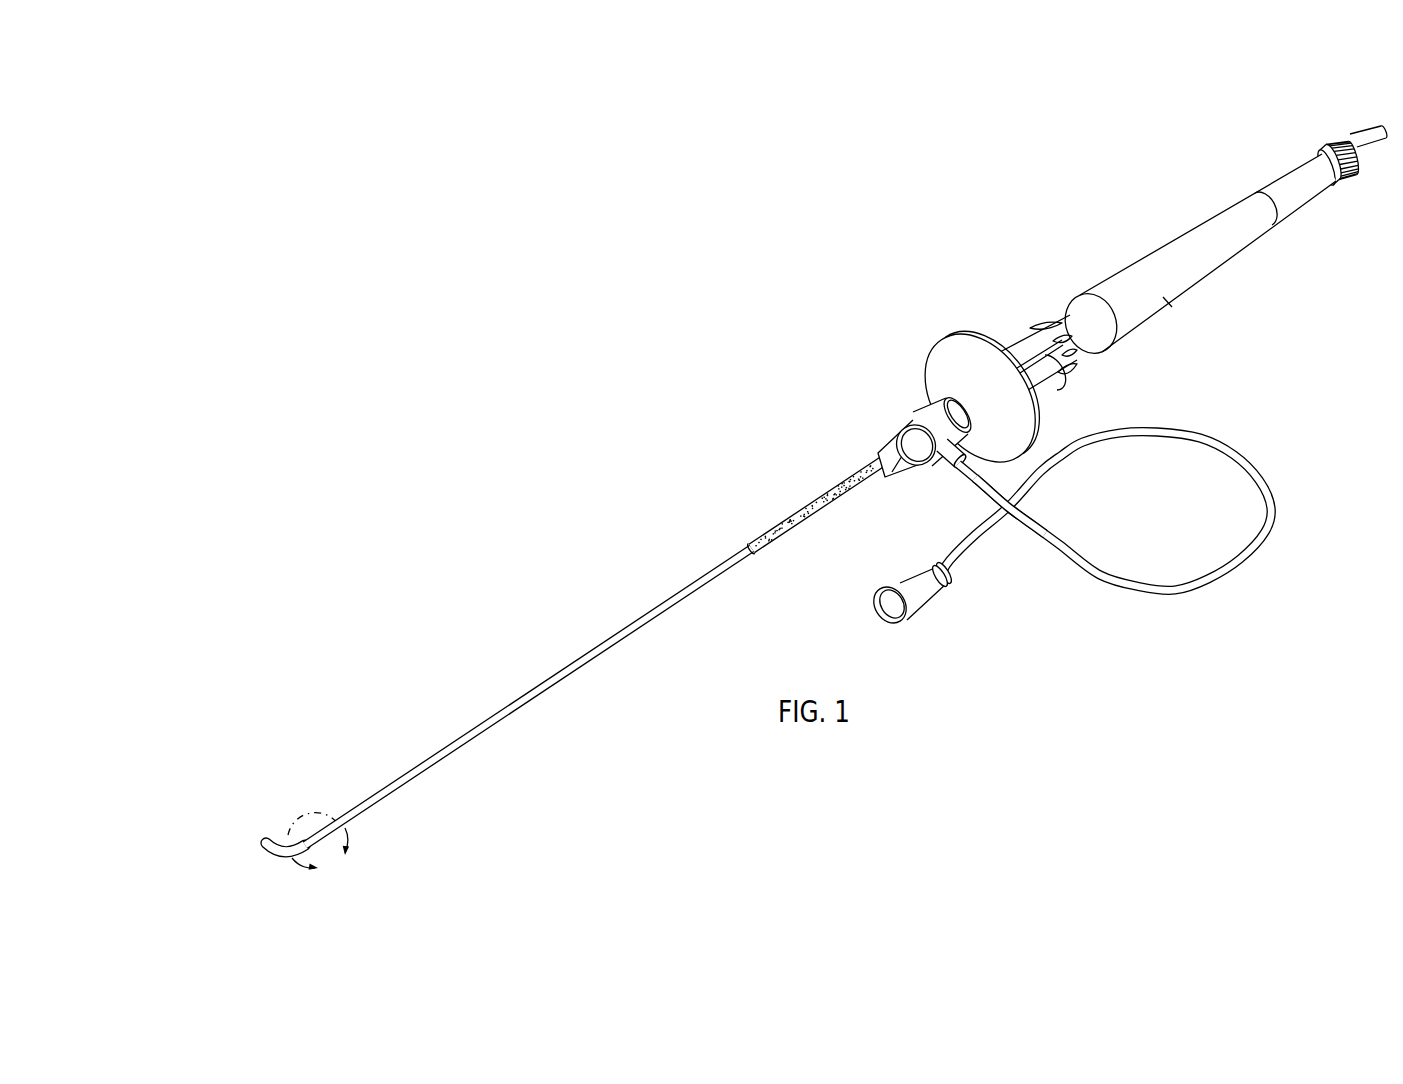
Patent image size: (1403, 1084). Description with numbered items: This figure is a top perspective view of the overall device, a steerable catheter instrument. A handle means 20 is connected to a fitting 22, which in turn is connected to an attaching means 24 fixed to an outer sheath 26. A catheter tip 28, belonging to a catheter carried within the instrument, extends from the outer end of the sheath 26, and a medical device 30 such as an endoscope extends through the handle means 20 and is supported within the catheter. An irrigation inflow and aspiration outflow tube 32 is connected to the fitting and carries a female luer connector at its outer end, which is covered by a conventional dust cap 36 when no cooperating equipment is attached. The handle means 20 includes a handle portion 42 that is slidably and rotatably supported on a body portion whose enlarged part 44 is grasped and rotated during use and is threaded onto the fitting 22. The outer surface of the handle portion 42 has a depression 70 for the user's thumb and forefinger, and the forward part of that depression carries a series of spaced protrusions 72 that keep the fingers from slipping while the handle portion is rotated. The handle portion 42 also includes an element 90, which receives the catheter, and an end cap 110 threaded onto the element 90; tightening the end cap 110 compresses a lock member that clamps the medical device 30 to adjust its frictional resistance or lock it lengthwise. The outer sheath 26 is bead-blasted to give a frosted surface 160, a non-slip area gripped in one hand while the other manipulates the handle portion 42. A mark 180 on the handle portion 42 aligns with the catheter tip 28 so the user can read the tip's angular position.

The handle means 20 is at (1193, 257).
The fitting 22 is at (915, 406).
The attaching means 24 is at (892, 446).
The outer sheath 26 is at (658, 604).
The catheter tip 28 is at (268, 843).
The medical device 30 is at (1368, 145).
The irrigation inflow and aspiration outflow tube 32 is at (1040, 548).
The dust cap 36 is at (896, 586).
The handle portion 42 is at (1166, 301).
The enlarged part 44 is at (947, 348).
The depression 70 is at (1098, 350).
The spaced protrusions 72 is at (1060, 372).
The element 90 is at (1302, 197).
The end cap 110 is at (1330, 138).
The frosted surface 160 is at (800, 510).
The mark 180 is at (1047, 370).